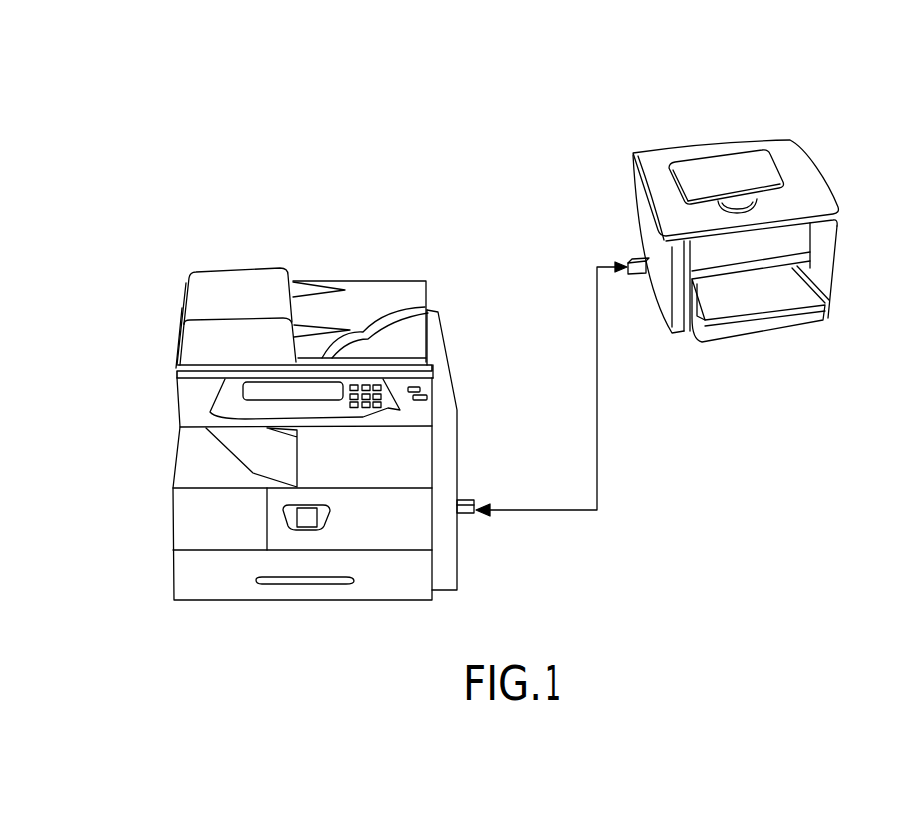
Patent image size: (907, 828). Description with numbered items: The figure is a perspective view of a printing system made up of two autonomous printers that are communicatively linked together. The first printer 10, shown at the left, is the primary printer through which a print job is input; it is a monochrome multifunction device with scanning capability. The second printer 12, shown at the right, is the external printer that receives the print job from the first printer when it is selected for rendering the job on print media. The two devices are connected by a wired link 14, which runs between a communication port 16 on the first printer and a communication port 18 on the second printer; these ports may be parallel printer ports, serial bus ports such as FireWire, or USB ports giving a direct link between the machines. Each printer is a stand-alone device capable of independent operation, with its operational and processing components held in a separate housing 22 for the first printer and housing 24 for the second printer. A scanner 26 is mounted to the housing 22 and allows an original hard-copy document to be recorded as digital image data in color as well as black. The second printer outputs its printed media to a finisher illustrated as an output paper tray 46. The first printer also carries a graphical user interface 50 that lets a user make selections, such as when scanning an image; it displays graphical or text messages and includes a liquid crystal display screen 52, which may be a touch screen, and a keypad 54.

The first printer 10 is at (160, 241).
The second printer 12 is at (695, 93).
The wired link 14 is at (596, 363).
The communication port 16 is at (467, 500).
The communication port 18 is at (629, 260).
The housing 22 is at (190, 516).
The housing 24 is at (838, 226).
The scanner 26 is at (250, 330).
The output paper tray 46 is at (826, 303).
The user interface 50 is at (205, 397).
The liquid crystal display screen 52 is at (358, 378).
The keypad 54 is at (390, 398).